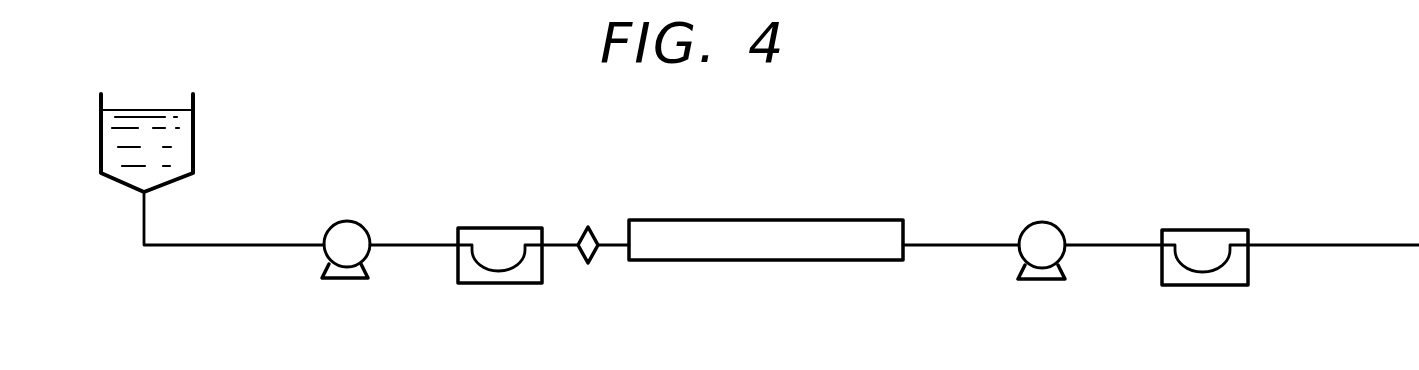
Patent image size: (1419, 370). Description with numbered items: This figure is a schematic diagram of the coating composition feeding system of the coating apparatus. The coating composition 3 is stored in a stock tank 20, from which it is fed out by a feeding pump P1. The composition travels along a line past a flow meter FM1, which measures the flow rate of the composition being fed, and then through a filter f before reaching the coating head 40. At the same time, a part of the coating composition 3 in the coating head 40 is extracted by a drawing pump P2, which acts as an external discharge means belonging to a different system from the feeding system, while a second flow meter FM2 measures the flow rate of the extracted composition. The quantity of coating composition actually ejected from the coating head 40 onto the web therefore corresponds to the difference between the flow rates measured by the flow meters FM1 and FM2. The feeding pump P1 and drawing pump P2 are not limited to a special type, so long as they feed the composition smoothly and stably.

The coating composition 3 is at (174, 110).
The stock tank 20 is at (194, 146).
The feeding pump P1 is at (352, 231).
The flow meter FM1 is at (500, 228).
The filter f is at (581, 228).
The coating head 40 is at (825, 221).
The drawing pump P2 is at (1051, 231).
The flow meter FM2 is at (1208, 230).